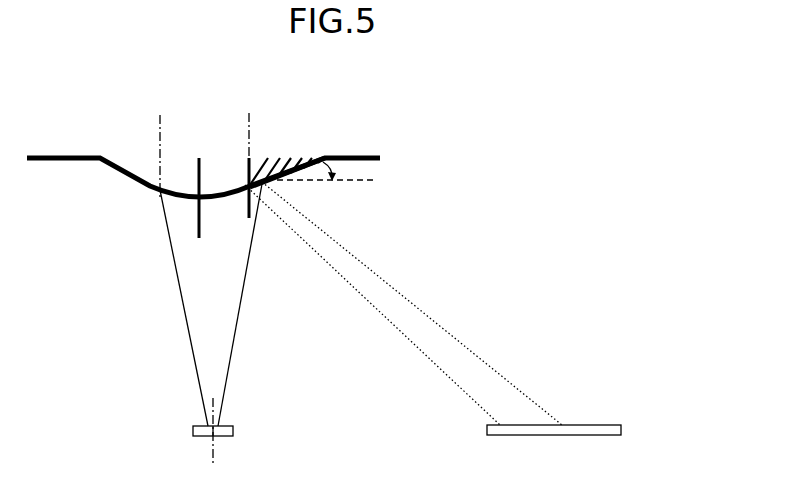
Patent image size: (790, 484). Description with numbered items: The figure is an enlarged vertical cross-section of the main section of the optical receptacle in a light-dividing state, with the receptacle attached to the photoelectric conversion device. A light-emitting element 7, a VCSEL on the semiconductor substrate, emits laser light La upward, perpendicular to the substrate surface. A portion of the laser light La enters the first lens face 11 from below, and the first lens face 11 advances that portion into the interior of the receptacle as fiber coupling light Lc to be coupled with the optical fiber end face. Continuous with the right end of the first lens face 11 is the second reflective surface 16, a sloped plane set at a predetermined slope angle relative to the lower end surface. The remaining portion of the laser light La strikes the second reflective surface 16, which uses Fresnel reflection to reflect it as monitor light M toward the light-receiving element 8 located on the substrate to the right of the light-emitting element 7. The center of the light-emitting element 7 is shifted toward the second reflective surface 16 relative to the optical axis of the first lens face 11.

The first lens face 11 is at (158, 191).
The second reflective surface 16 is at (278, 181).
The light-emitting element 7 is at (225, 423).
The light-receiving element 8 is at (545, 425).
The fiber coupling light Lc is at (156, 139).
The laser light La is at (182, 303).
The monitor light M is at (346, 283).